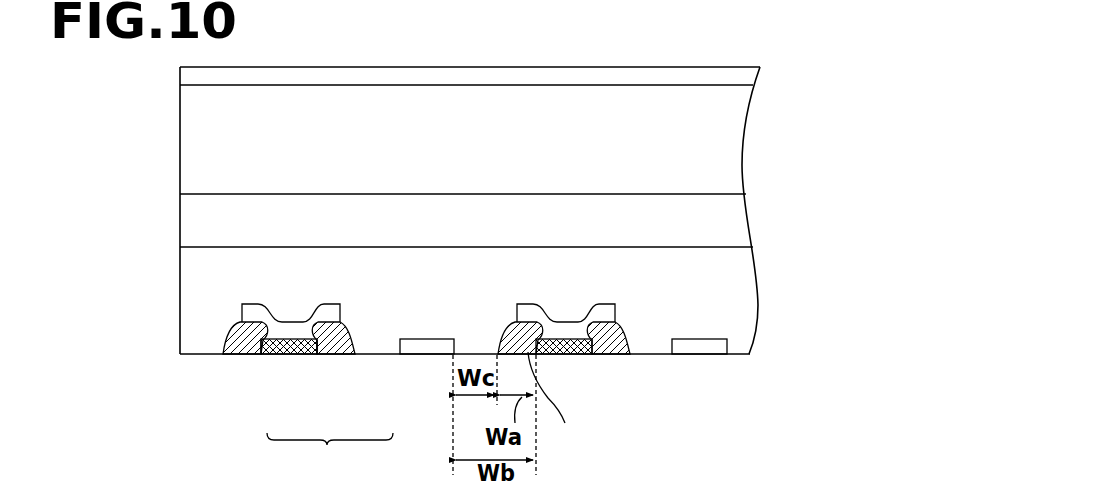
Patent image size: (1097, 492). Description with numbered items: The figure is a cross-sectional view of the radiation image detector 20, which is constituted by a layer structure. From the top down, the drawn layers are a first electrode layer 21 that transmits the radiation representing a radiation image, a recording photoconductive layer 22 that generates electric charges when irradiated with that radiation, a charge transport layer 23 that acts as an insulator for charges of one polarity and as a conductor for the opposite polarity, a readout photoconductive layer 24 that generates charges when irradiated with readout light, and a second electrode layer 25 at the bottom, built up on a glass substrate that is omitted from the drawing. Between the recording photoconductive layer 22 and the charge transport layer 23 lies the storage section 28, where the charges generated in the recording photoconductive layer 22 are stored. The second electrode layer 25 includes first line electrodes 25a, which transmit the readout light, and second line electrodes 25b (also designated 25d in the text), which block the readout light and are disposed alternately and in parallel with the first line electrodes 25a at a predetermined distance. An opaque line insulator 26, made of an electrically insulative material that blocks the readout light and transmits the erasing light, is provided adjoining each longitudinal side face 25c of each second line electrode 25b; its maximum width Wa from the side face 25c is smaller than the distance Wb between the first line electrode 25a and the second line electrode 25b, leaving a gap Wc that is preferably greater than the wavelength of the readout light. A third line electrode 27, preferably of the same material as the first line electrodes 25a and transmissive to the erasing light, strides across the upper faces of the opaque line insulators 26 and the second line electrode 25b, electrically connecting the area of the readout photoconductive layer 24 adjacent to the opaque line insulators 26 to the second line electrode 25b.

The radiation image detector 20 is at (750, 41).
The first electrode layer 21 is at (188, 76).
The recording photoconductive layer 22 is at (188, 124).
The storage section 28 is at (209, 192).
The charge transport layer 23 is at (188, 219).
The readout photoconductive layer 24 is at (188, 268).
The second electrode layer 25 is at (330, 453).
The first line electrode 25a is at (410, 355).
The second line electrode 25b is at (290, 355).
The side face 25c is at (263, 355).
The second line electrode 25d is at (561, 401).
The opaque line insulator 26 is at (228, 355).
The third line electrode 27 is at (337, 307).